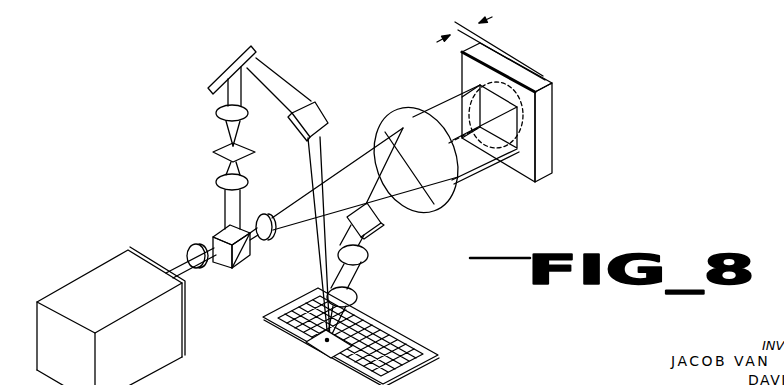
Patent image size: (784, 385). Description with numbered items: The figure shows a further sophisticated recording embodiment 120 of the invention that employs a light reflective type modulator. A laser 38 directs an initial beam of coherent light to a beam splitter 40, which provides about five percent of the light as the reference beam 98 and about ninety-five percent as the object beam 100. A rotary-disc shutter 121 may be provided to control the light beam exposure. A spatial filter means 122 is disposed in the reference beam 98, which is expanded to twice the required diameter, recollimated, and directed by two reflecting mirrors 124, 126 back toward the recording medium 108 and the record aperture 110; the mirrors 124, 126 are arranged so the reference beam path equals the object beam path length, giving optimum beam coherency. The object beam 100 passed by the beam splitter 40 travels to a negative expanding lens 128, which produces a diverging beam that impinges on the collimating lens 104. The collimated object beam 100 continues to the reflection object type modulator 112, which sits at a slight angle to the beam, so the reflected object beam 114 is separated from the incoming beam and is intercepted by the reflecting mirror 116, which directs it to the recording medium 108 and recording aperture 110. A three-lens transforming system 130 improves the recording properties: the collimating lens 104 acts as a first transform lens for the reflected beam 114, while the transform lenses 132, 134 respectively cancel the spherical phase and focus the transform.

The laser 38 is at (98, 272).
The beam splitter 40 is at (246, 258).
The reference beam 98 is at (220, 97).
The object beam 100 is at (361, 152).
The collimating lens 104 is at (414, 115).
The recording medium 108 is at (393, 333).
The record aperture 110 is at (317, 342).
The reflection object type modulator 112 is at (555, 127).
The reflected object beam 114 is at (436, 208).
The reflecting mirror 116 is at (378, 224).
The embodiment 120 is at (393, 101).
The rotary-disc shutter 121 is at (189, 246).
The spatial filter means 122 is at (209, 112).
The reflecting mirror 124 is at (233, 62).
The reflecting mirror 126 is at (315, 101).
The negative expanding lens 128 is at (270, 241).
The three-lens transforming system 130 is at (428, 238).
The transform lens 132 is at (366, 257).
The transform lens 134 is at (357, 298).